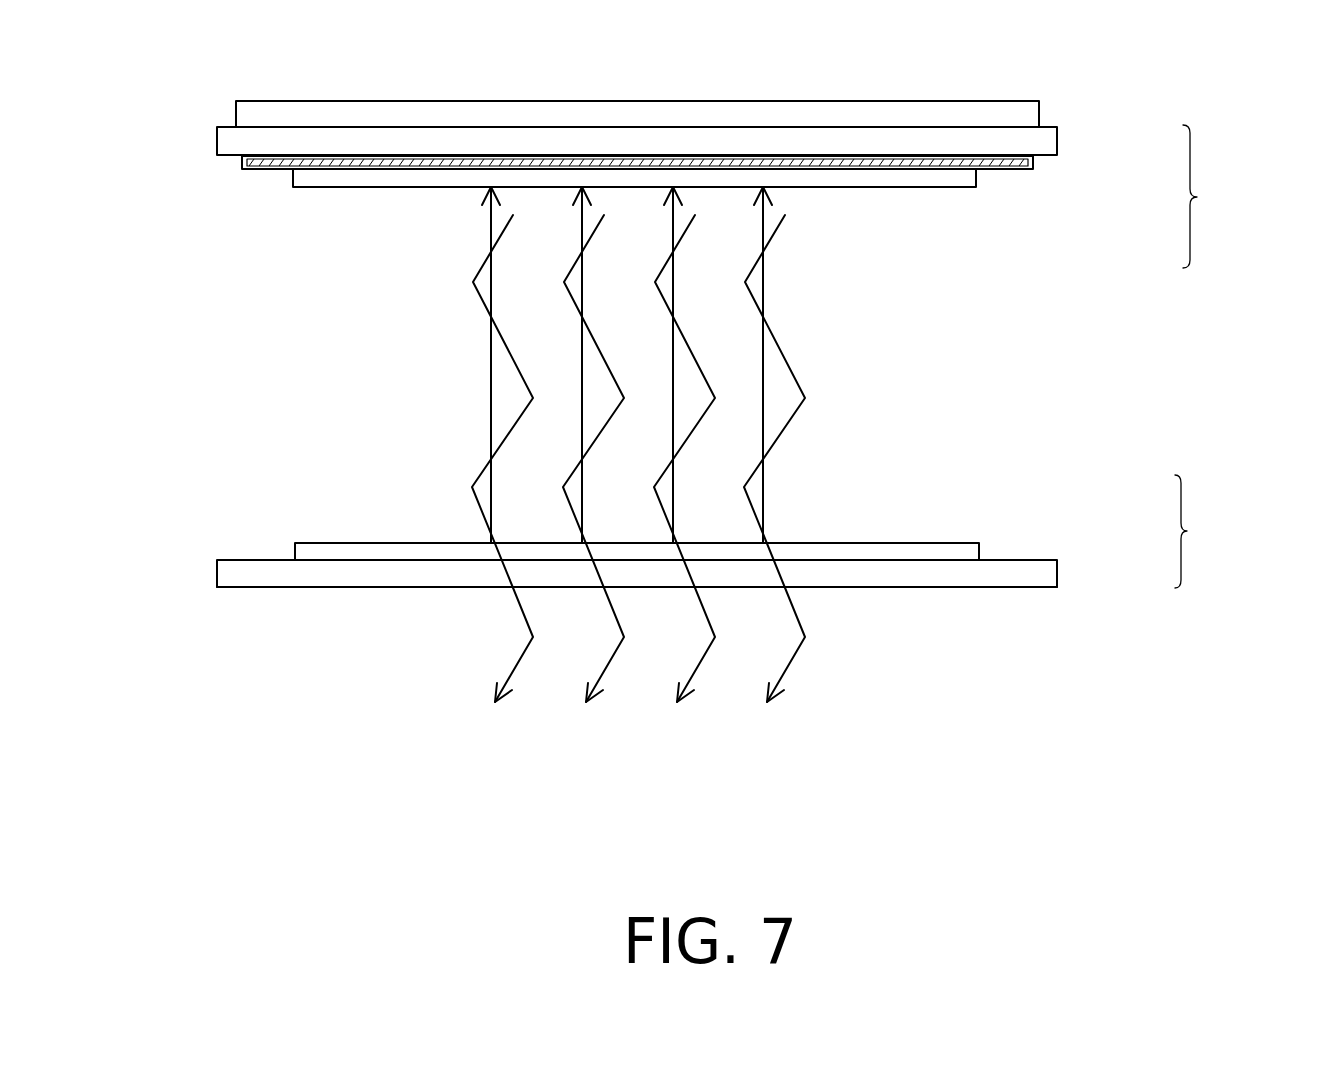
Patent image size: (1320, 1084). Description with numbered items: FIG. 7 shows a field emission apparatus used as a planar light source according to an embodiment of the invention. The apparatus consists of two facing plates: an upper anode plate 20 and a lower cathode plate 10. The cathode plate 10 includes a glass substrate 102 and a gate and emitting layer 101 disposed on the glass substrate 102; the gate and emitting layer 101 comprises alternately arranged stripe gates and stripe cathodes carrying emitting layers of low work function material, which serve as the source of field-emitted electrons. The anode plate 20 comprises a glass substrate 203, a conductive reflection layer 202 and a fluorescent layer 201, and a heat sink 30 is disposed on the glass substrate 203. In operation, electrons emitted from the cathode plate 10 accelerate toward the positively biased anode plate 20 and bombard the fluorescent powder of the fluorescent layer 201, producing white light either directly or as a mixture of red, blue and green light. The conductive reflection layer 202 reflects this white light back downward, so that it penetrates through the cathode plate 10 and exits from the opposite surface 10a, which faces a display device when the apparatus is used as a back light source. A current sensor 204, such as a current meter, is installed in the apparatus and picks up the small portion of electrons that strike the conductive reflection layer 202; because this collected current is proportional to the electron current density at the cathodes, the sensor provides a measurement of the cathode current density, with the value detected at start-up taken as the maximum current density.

The heat sink 30 is at (1028, 119).
The glass substrate 203 is at (1043, 138).
The current sensor 204 is at (242, 160).
The conductive reflection layer 202 is at (1038, 163).
The fluorescent layer 201 is at (957, 187).
The anode plate 20 is at (1216, 196).
The gate and emitting layer 101 is at (963, 544).
The glass substrate 102 is at (1043, 572).
The cathode plate 10 is at (1207, 531).
The surface of the cathode plate 10a is at (347, 573).